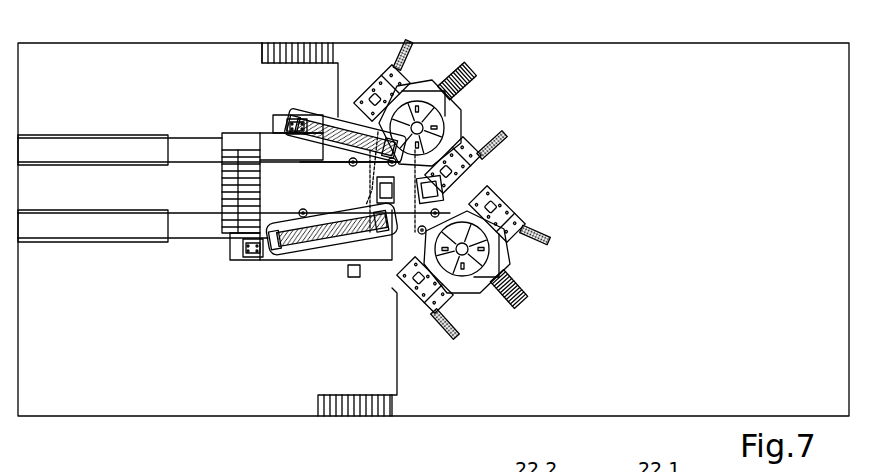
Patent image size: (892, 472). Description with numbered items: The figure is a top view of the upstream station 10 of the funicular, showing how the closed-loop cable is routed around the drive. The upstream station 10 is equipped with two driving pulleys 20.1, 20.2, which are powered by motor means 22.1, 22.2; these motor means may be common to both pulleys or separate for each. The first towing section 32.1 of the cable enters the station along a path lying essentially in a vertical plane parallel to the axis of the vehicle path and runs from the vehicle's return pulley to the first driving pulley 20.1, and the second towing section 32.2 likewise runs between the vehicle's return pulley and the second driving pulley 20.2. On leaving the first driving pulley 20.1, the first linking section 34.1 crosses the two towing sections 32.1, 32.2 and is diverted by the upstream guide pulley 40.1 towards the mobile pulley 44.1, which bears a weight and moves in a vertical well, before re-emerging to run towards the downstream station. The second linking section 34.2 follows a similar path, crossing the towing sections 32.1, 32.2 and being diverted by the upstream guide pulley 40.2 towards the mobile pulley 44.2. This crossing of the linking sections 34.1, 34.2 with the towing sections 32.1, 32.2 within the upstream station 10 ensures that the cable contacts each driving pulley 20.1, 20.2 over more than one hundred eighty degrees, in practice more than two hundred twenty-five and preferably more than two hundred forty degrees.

The upstream station 10 is at (584, 176).
The first driving pulley 20.1 is at (499, 251).
The second driving pulley 20.2 is at (447, 106).
The motor means 22.1 is at (512, 252).
The motor means 22.2 is at (459, 123).
The first towing section 32.1 is at (41, 213).
The second towing section 32.2 is at (41, 162).
The first linking section 34.1 is at (100, 238).
The second linking section 34.2 is at (98, 138).
The upstream guide pulley 40.1 is at (218, 240).
The upstream guide pulley 40.2 is at (266, 137).
The mobile pulley 44.1 is at (347, 227).
The mobile pulley 44.2 is at (378, 138).